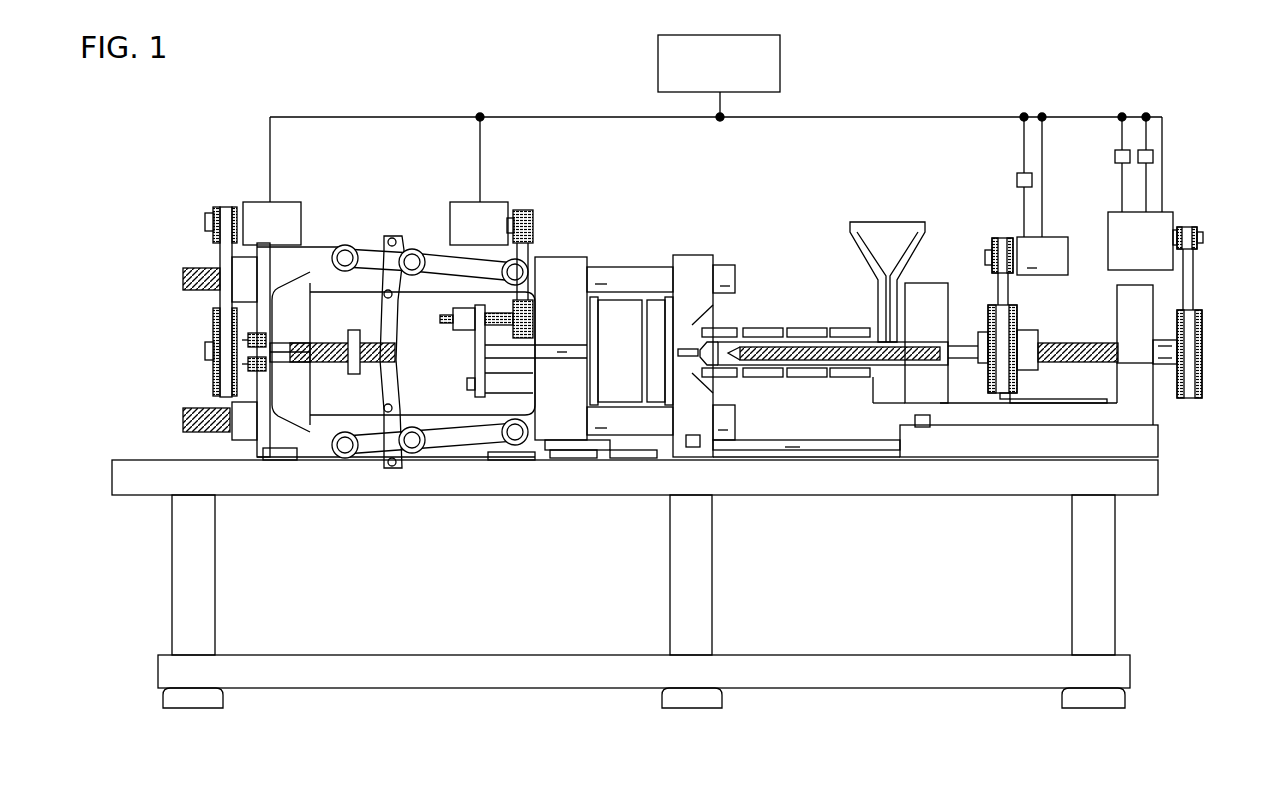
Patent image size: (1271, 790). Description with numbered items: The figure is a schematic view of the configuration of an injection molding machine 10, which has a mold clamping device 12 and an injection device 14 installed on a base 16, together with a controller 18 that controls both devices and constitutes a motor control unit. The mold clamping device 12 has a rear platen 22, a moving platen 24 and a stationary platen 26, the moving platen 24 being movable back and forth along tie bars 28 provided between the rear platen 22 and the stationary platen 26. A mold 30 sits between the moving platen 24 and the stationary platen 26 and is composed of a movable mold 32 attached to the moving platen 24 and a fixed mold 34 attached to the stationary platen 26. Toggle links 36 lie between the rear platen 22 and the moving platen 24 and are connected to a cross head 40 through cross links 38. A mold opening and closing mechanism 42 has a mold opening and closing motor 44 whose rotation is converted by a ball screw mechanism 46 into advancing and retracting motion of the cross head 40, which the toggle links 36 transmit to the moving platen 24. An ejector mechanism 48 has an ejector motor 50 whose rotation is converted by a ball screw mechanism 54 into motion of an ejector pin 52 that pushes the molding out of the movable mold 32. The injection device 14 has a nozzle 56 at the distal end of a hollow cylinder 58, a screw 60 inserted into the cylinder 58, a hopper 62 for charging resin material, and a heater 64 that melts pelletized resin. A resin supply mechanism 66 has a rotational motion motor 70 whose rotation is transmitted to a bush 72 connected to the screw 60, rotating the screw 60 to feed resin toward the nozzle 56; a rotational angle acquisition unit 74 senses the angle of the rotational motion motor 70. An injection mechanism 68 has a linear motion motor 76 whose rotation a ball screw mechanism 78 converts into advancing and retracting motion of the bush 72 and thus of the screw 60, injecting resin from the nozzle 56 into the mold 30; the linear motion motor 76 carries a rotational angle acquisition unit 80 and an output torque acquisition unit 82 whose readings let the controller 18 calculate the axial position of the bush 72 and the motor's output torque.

The injection molding machine 10 is at (577, 66).
The mold clamping device 12 is at (509, 292).
The injection device 14 is at (950, 282).
The base 16 is at (869, 480).
The controller 18 is at (780, 65).
The rear platen 22 is at (308, 255).
The moving platen 24 is at (575, 257).
The stationary platen 26 is at (694, 254).
The tie bars 28 is at (638, 266).
The mold 30 is at (712, 333).
The movable mold 32 is at (630, 315).
The fixed mold 34 is at (655, 316).
The toggle links 36 is at (425, 300).
The cross links 38 is at (391, 238).
The cross head 40 is at (380, 318).
The mold opening and closing mechanism 42 is at (235, 174).
The mold opening and closing motor 44 is at (283, 206).
The ball screw mechanism 46 is at (333, 362).
The ejector mechanism 48 is at (505, 262).
The ejector motor 50 is at (468, 215).
The ejector pin 52 is at (563, 356).
The ball screw mechanism 54 is at (452, 322).
The nozzle 56 is at (689, 360).
The cylinder 58 is at (765, 372).
The screw 60 is at (811, 370).
The hopper 62 is at (883, 228).
The heater 64 is at (855, 372).
The resin supply mechanism 66 is at (1028, 262).
The injection mechanism 68 is at (1157, 252).
The rotational motion motor 70 is at (1053, 237).
The bush 72 is at (985, 335).
The rotational angle acquisition unit 74 is at (1016, 181).
The linear motion motor 76 is at (1120, 253).
The ball screw mechanism 78 is at (1077, 370).
The rotational angle acquisition unit 80 is at (1115, 158).
The output torque acquisition unit 82 is at (1150, 150).